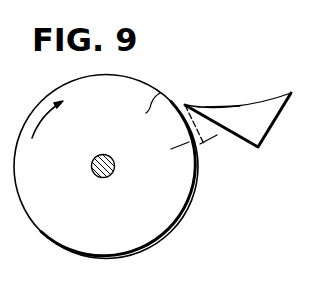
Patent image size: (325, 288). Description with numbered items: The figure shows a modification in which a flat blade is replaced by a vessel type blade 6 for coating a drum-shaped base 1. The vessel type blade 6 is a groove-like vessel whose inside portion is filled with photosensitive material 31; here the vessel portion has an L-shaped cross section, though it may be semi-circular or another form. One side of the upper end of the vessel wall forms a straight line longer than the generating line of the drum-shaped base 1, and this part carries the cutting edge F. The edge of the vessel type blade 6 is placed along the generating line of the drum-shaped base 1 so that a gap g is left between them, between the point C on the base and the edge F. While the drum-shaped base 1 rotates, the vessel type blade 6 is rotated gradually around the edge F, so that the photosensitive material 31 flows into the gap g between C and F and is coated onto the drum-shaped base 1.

The drum-shaped base 1 is at (58, 232).
The vessel type blade 6 is at (281, 112).
The photosensitive material 31 is at (243, 118).
The point on drum-shaped base C is at (144, 109).
The cutting edge F is at (194, 98).
The gap g is at (195, 151).